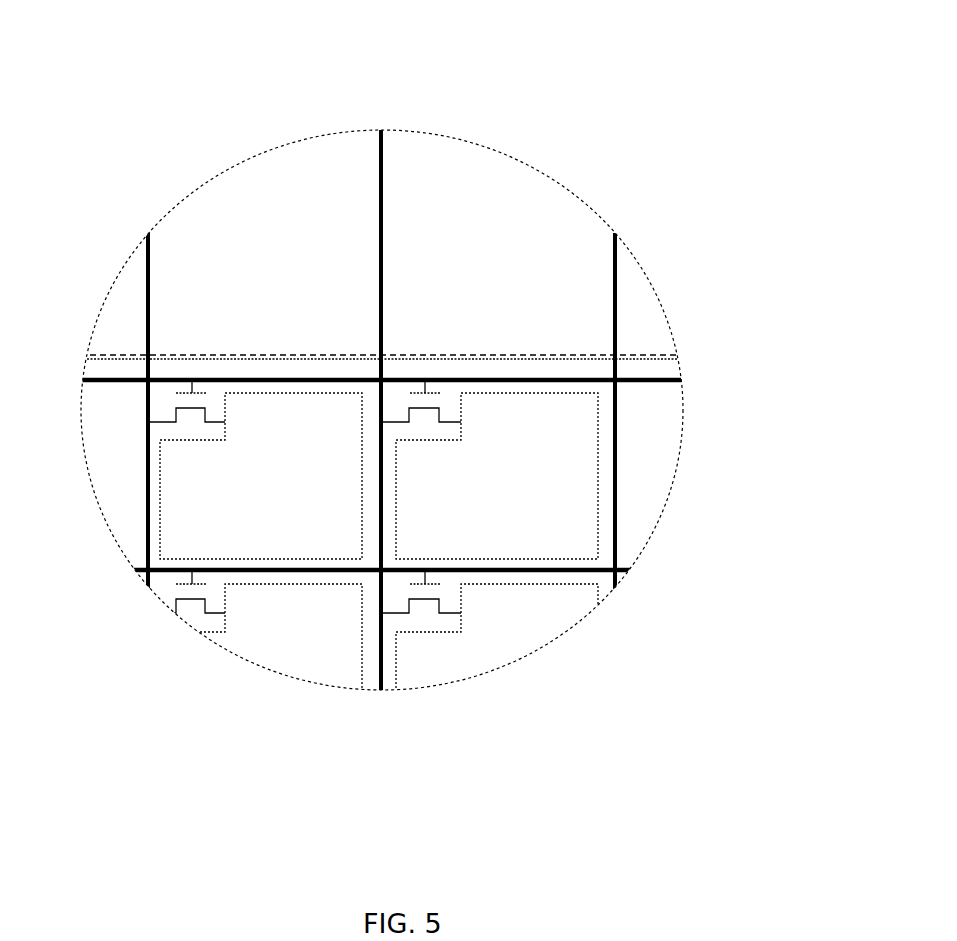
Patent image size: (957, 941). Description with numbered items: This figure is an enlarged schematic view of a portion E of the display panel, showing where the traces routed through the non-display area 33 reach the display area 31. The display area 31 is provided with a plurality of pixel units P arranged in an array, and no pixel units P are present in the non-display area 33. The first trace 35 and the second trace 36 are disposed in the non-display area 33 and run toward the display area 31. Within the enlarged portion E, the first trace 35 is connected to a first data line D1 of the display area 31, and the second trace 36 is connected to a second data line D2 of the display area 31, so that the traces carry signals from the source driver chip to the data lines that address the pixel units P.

The portion E is at (250, 157).
The display area 31 is at (656, 430).
The non-display area 33 is at (586, 265).
The first trace 35 is at (383, 215).
The second trace 36 is at (145, 308).
The first data line D1 is at (145, 480).
The second data line D2 is at (378, 645).
The pixel unit P is at (567, 487).